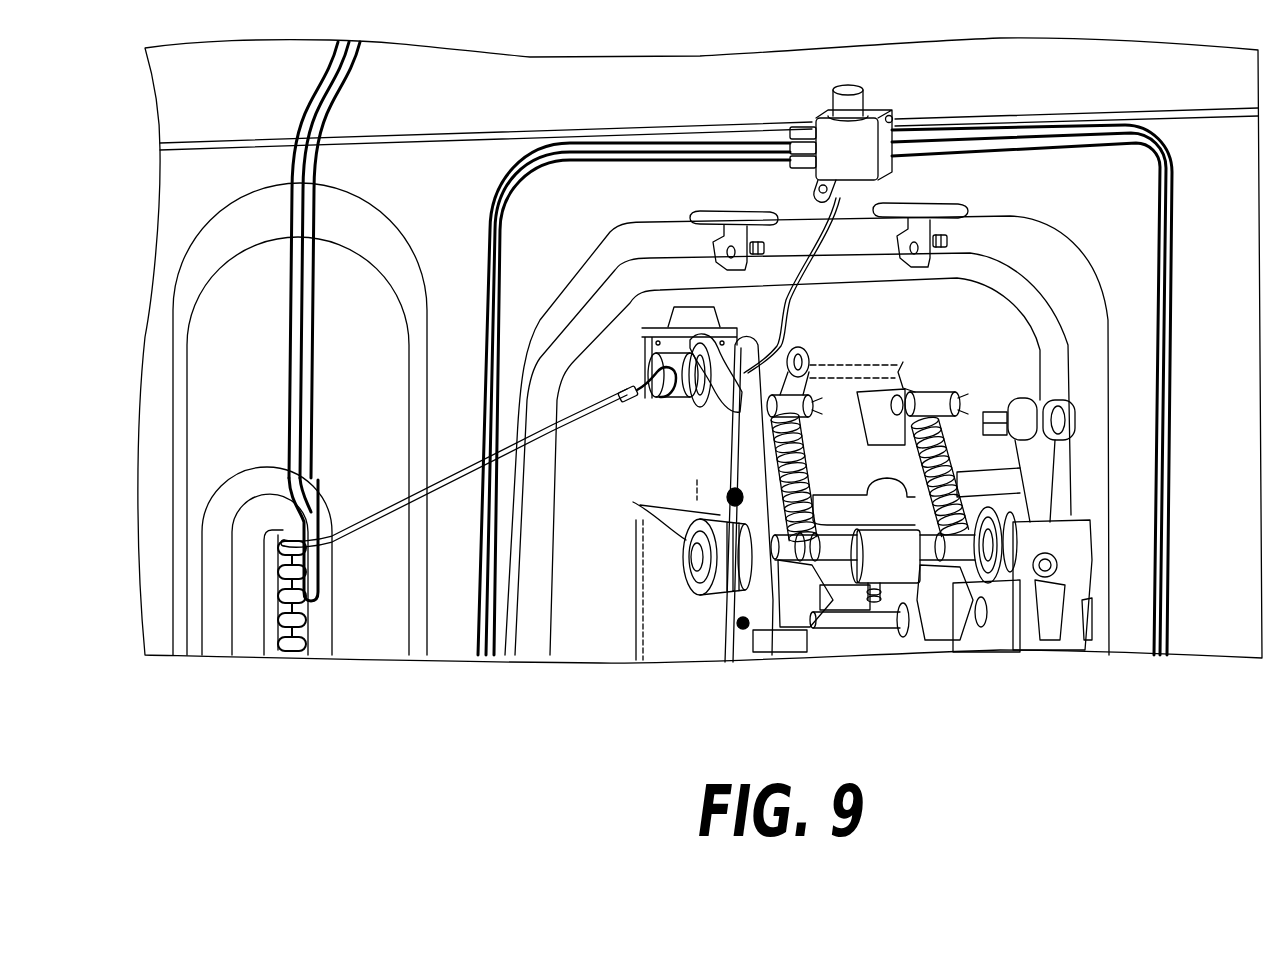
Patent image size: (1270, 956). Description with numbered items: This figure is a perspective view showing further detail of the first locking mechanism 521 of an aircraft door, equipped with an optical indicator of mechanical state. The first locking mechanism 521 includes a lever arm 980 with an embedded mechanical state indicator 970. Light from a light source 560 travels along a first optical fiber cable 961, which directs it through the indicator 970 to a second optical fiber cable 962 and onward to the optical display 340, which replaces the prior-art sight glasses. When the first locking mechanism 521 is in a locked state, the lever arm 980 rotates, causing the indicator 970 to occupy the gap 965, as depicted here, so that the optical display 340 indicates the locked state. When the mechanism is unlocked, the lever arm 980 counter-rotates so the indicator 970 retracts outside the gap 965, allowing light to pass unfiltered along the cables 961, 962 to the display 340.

The optical display 340 is at (270, 596).
The first locking mechanism 521 is at (862, 469).
The light source 560 is at (842, 152).
The first optical fiber cable 961 is at (823, 247).
The second optical fiber cable 962 is at (376, 520).
The gap 965 is at (697, 308).
The mechanical state indicator 970 is at (707, 392).
The lever arm 980 is at (741, 610).